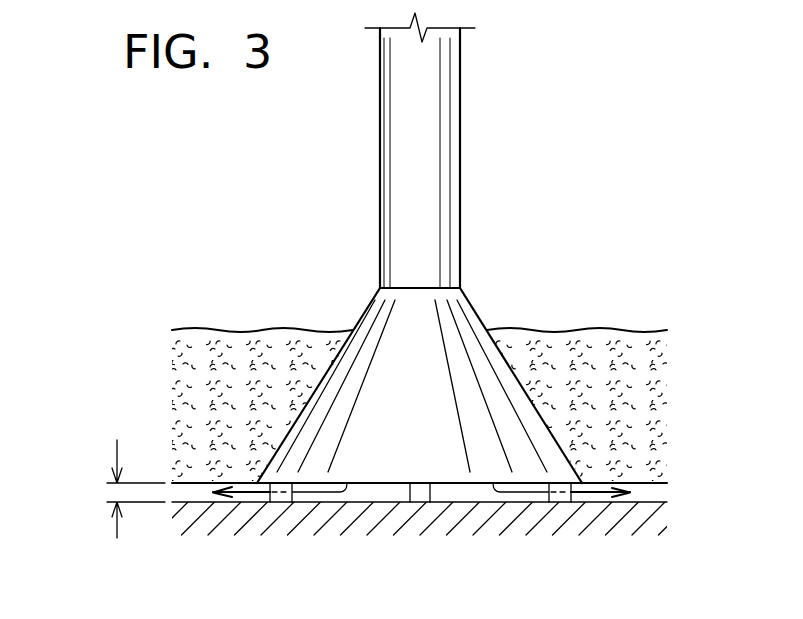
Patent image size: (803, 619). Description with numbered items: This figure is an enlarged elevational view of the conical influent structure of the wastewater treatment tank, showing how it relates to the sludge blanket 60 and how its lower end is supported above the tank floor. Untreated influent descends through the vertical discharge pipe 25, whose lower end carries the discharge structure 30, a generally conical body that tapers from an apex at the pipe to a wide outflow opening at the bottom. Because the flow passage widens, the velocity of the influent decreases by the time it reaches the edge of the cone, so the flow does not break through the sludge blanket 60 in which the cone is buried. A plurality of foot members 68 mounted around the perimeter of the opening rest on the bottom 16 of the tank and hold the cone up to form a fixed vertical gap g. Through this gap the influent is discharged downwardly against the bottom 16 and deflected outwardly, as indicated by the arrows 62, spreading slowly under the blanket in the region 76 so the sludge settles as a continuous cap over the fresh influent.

The bottom of the tank 16 is at (290, 520).
The vertical discharge pipe 25 is at (447, 108).
The discharge structure 30 is at (453, 333).
The sludge blanket 60 is at (595, 370).
The arrows 62 is at (322, 495).
The foot members 68 is at (423, 492).
The region 76 is at (651, 492).
The gap g is at (117, 492).